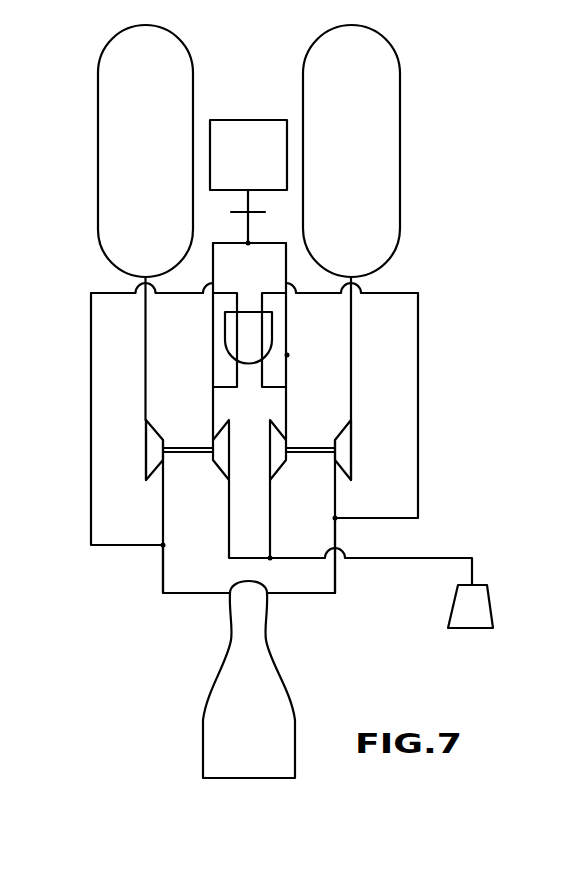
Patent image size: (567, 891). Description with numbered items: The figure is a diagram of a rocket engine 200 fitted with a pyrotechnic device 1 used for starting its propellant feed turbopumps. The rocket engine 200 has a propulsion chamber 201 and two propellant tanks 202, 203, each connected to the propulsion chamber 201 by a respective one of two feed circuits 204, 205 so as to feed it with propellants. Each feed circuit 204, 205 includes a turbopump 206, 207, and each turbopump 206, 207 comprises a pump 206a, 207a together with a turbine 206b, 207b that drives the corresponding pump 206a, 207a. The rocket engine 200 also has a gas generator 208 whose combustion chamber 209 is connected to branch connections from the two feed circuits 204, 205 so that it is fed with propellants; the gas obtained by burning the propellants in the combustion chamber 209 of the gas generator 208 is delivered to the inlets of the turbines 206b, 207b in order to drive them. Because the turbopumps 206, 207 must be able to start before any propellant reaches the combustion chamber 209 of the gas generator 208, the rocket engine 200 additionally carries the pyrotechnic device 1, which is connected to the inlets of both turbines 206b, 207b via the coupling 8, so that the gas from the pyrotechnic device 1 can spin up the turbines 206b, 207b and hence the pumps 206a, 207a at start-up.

The pyrotechnic device 1 is at (259, 164).
The coupling 8 is at (258, 213).
The rocket engine 200 is at (473, 62).
The propulsion chamber 201 is at (258, 605).
The propellant tank 202 is at (163, 162).
The propellant tank 203 is at (368, 161).
The feed circuit 204 is at (160, 572).
The feed circuit 205 is at (337, 568).
The turbopump 206 is at (142, 430).
The pump 206a is at (150, 457).
The turbine 206b is at (216, 442).
The turbopump 207 is at (365, 433).
The pump 207a is at (345, 457).
The turbine 207b is at (287, 438).
The gas generator 208 is at (287, 355).
The combustion chamber 209 is at (243, 335).